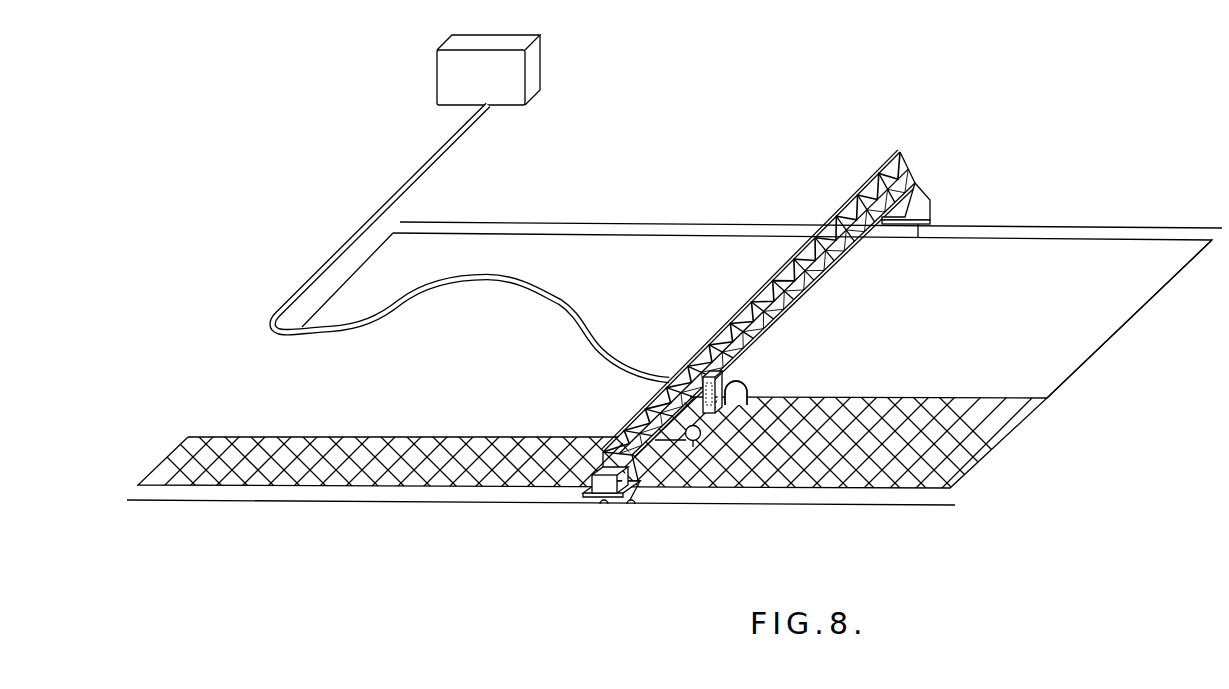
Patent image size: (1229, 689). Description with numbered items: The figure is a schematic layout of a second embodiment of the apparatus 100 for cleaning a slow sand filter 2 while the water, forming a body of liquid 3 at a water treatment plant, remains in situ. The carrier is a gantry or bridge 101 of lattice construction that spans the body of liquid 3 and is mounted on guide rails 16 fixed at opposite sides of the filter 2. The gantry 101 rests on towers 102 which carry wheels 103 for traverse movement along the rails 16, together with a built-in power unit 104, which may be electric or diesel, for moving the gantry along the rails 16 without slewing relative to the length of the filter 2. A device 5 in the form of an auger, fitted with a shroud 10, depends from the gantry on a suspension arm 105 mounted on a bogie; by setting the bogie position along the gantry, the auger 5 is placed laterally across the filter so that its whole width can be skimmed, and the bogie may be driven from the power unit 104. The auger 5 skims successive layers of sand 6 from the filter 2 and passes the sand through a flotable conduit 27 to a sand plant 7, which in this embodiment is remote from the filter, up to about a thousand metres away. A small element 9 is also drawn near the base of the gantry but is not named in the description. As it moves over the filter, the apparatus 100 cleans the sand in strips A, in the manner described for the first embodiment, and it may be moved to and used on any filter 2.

The filter 2 is at (1062, 352).
The body of liquid 3 is at (1072, 299).
The device 5 is at (750, 380).
The sand 6 is at (930, 397).
The sand plant 7 is at (537, 68).
The roller 9 is at (697, 447).
The shroud 10 is at (770, 402).
The guide rails 16 is at (1060, 226).
The flotable conduit 27 is at (555, 296).
The apparatus 100 is at (656, 527).
The gantry or bridge 101 is at (752, 298).
The towers 102 is at (917, 202).
The wheels 103 is at (884, 224).
The power unit 104 is at (588, 484).
The suspension arm 105 is at (700, 384).
The strips A is at (537, 406).